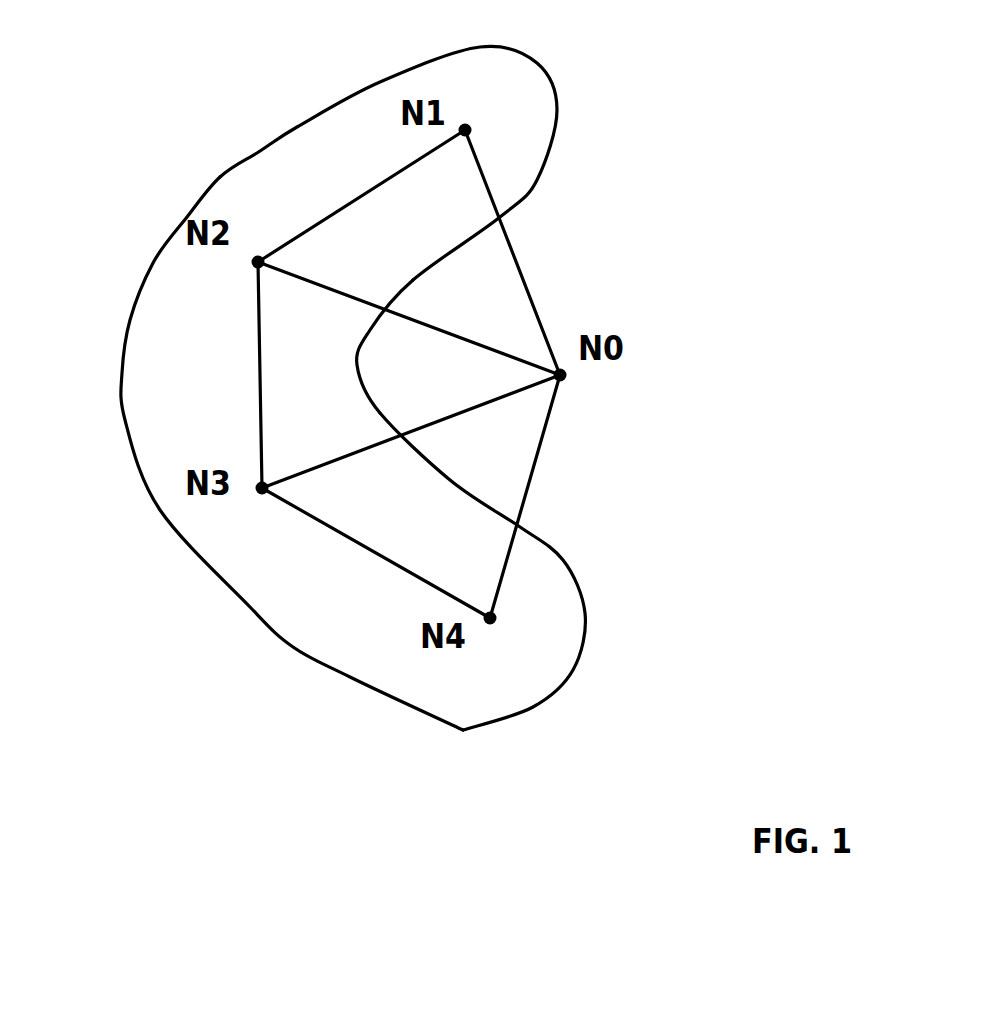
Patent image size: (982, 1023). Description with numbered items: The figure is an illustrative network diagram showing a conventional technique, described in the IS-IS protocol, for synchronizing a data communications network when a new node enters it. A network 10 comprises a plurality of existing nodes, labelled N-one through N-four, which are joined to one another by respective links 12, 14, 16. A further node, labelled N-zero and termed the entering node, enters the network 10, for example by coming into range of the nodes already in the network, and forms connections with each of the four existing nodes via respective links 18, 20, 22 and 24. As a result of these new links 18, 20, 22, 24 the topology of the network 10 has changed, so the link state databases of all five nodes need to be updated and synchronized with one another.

The network 10 is at (320, 371).
The link 12 is at (332, 207).
The link 14 is at (238, 398).
The link 16 is at (375, 572).
The link 18 is at (597, 241).
The link 20 is at (468, 337).
The link 22 is at (452, 415).
The link 24 is at (617, 490).